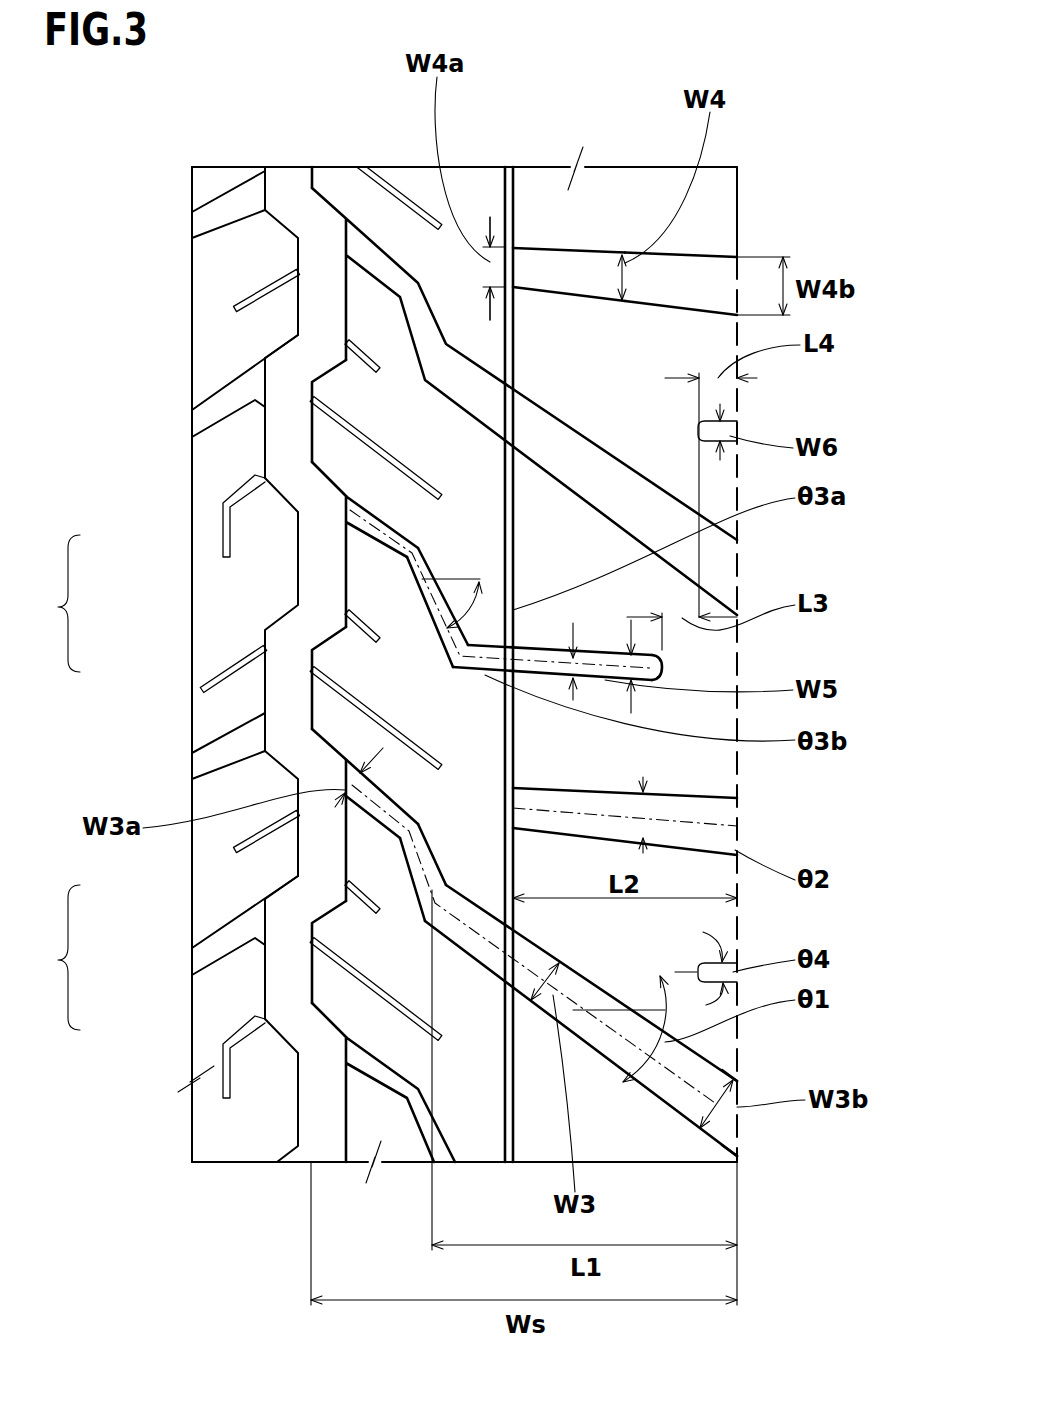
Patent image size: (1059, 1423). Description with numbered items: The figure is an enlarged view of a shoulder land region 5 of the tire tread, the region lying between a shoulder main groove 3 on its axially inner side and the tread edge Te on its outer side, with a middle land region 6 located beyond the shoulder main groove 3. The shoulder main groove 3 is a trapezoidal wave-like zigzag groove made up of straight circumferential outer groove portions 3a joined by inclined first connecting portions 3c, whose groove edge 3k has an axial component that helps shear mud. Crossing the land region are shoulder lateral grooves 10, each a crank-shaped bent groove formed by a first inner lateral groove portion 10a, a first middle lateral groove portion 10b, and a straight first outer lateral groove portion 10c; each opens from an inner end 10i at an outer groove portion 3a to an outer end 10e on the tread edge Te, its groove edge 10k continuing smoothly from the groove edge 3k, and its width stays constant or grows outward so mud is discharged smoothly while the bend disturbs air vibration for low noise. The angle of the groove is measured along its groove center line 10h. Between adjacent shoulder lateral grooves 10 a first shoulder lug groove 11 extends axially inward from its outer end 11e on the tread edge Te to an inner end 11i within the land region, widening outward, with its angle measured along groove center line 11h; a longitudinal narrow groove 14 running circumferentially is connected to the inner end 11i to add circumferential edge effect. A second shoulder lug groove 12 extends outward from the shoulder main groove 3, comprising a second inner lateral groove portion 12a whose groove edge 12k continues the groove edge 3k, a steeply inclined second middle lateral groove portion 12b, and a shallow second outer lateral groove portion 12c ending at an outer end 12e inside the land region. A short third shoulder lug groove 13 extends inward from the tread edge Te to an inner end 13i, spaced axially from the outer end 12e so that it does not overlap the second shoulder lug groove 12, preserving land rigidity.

The shoulder main groove 3 is at (290, 1017).
The outer groove portion 3a is at (322, 288).
The first connecting portion 3c is at (303, 214).
The groove edge 3k is at (332, 178).
The shoulder land region 5 is at (473, 200).
The middle land region 6 is at (217, 1130).
The shoulder lateral groove 10 is at (461, 628).
The first inner lateral groove portion 10a is at (370, 818).
The first middle lateral groove portion 10b is at (405, 870).
The first outer lateral groove portion 10c is at (458, 950).
The outer end 10e is at (737, 1117).
The groove center line 10h is at (677, 1073).
The inner end 10i is at (340, 787).
The groove edge 10k is at (373, 243).
The first shoulder lug groove 11 is at (698, 814).
The outer end 11e is at (740, 268).
The groove center line 11h is at (718, 826).
The inner end 11i is at (515, 272).
The second shoulder lug groove 12 is at (461, 812).
The second inner lateral groove portion 12a is at (380, 540).
The second middle lateral groove portion 12b is at (417, 593).
The second outer lateral groove portion 12c is at (497, 668).
The outer end 12e is at (660, 672).
The groove edge 12k is at (330, 382).
The third shoulder lug groove 13 is at (712, 968).
The inner end 13i is at (697, 431).
The longitudinal narrow groove 14 is at (514, 205).
The tread edge Te is at (738, 210).